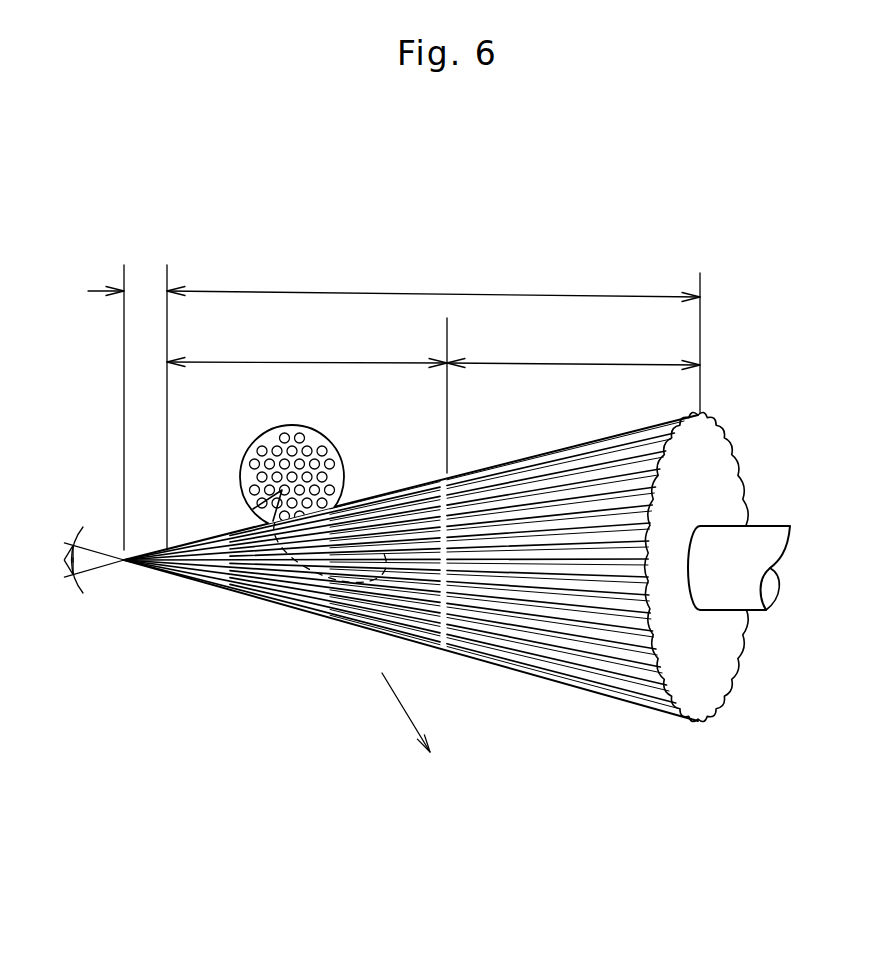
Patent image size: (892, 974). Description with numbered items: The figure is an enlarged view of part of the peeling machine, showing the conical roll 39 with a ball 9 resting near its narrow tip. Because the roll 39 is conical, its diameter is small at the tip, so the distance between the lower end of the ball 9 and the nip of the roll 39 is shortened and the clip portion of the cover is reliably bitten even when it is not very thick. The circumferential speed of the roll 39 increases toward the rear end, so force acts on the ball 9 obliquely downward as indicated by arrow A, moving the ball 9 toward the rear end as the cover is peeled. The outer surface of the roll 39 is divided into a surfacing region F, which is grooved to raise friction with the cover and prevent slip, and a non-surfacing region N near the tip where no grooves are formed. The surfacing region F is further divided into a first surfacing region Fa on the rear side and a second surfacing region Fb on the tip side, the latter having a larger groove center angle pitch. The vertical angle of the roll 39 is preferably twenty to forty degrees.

The ball 9 is at (284, 437).
The roll 39 is at (688, 685).
The non-surfacing region N is at (136, 279).
The surfacing region F is at (433, 285).
The second surfacing region Fb is at (307, 352).
The first surfacing region Fa is at (573, 354).
The arrow A is at (406, 712).